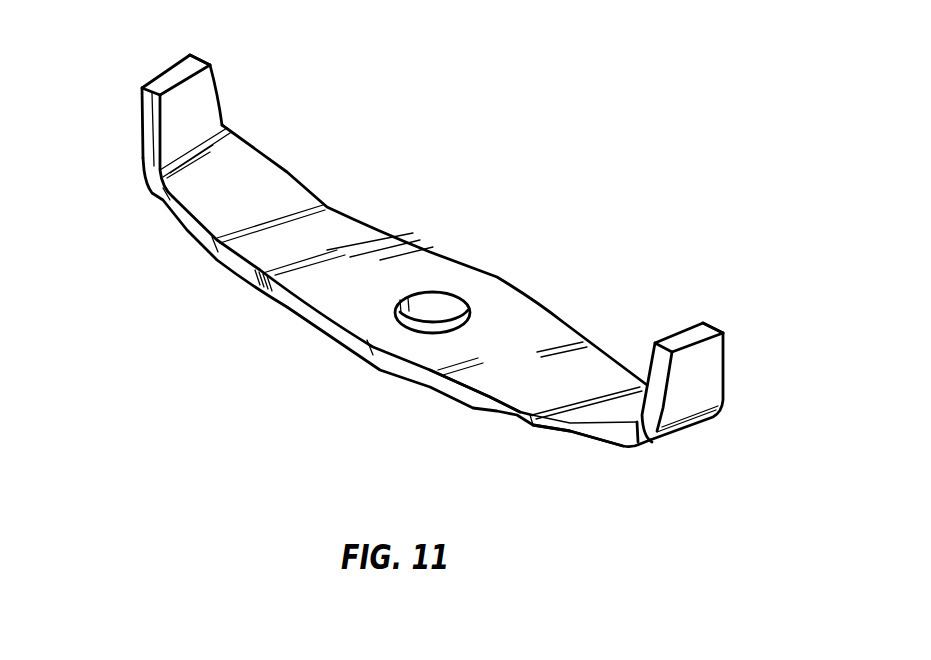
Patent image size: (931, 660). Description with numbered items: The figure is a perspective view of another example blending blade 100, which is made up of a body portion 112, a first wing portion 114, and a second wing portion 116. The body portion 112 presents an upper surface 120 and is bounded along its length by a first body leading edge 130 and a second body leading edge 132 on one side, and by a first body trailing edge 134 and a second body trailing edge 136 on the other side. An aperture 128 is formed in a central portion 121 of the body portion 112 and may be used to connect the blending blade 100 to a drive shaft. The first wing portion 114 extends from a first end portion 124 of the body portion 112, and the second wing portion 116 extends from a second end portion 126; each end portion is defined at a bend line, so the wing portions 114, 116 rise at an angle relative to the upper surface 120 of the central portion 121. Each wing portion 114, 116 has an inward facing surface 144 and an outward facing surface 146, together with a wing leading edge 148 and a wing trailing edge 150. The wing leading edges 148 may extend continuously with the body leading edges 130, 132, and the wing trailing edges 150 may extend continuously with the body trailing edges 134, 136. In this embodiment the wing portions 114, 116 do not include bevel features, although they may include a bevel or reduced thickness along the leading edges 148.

The blending blade 100 is at (433, 268).
The body portion 112 is at (493, 277).
The first wing portion 114 is at (260, 112).
The second wing portion 116 is at (720, 365).
The upper surface 120 is at (512, 356).
The central portion 121 is at (360, 315).
The first end portion 124 is at (183, 228).
The second end portion 126 is at (515, 412).
The aperture 128 is at (422, 306).
The first body leading edge 130 is at (290, 175).
The second body leading edge 132 is at (575, 430).
The first body trailing edge 134 is at (237, 263).
The second body trailing edge 136 is at (562, 322).
The inward facing surface 144 is at (195, 97).
The outward facing surface 146 is at (693, 398).
The wing leading edge 148 is at (218, 62).
The wing trailing edge 150 is at (148, 133).